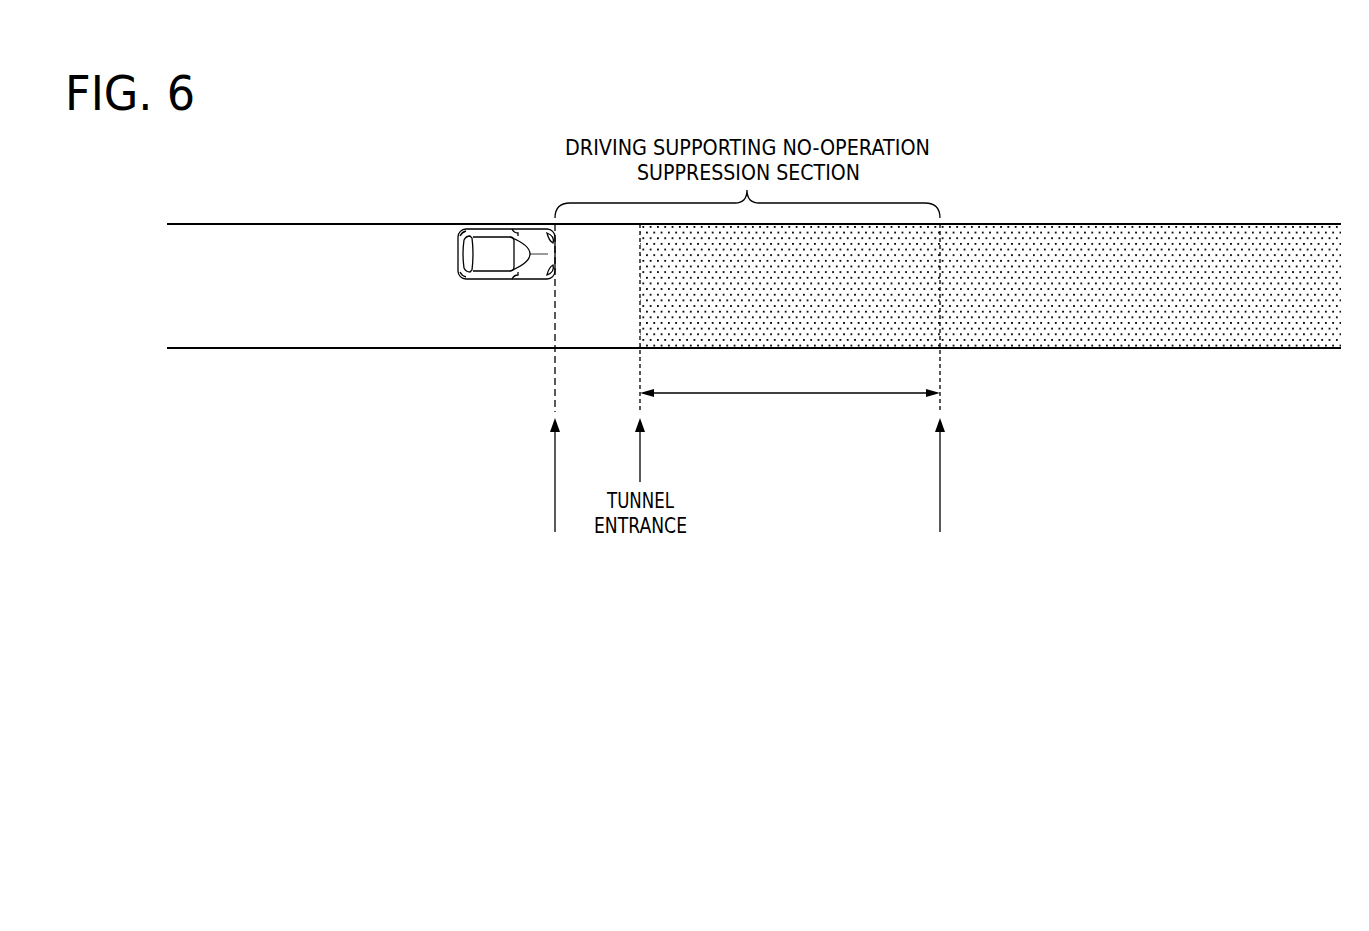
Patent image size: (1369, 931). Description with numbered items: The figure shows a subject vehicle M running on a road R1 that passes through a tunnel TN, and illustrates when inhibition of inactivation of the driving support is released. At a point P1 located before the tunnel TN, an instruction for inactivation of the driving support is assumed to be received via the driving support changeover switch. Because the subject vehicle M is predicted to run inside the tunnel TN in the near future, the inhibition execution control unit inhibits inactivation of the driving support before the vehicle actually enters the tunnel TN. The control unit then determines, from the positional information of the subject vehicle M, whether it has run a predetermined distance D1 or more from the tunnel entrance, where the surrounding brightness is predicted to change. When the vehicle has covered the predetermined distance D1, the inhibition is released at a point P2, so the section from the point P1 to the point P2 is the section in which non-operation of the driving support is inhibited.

The subject vehicle M is at (501, 232).
The road R1 is at (215, 301).
The tunnel TN is at (1037, 200).
The point P1 is at (555, 421).
The point P2 is at (940, 395).
The predetermined distance D1 is at (790, 377).